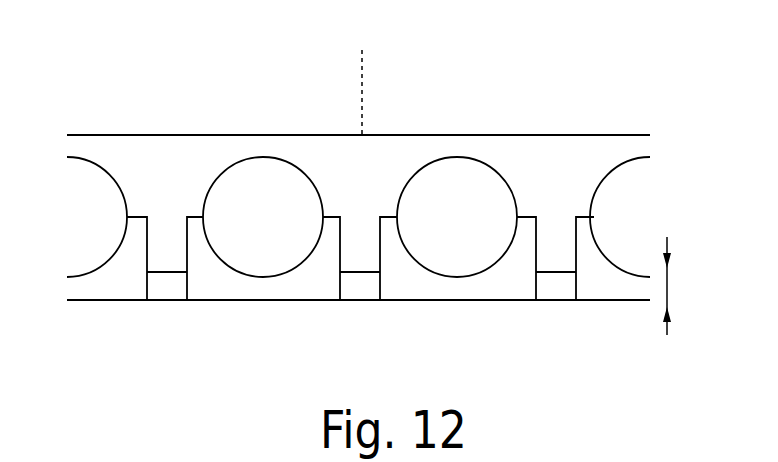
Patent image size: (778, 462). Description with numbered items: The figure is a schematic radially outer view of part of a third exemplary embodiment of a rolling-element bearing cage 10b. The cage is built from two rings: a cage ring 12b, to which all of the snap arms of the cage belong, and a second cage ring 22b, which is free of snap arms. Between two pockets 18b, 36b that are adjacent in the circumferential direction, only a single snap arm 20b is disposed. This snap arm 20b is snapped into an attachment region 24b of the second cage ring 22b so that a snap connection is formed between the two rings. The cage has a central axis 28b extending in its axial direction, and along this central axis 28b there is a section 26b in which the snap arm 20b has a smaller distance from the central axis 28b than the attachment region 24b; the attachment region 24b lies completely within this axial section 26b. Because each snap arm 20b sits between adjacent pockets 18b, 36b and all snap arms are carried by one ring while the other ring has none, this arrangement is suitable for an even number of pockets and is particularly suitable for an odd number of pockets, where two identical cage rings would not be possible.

The rolling-element bearing cage 10b is at (122, 70).
The cage ring 12b is at (383, 188).
The pocket 18b is at (281, 232).
The pocket 36b is at (477, 232).
The snap arm 20b is at (365, 252).
The second cage ring 22b is at (302, 283).
The attachment region 24b is at (355, 288).
The section 26b is at (688, 286).
The central axis 28b is at (387, 92).